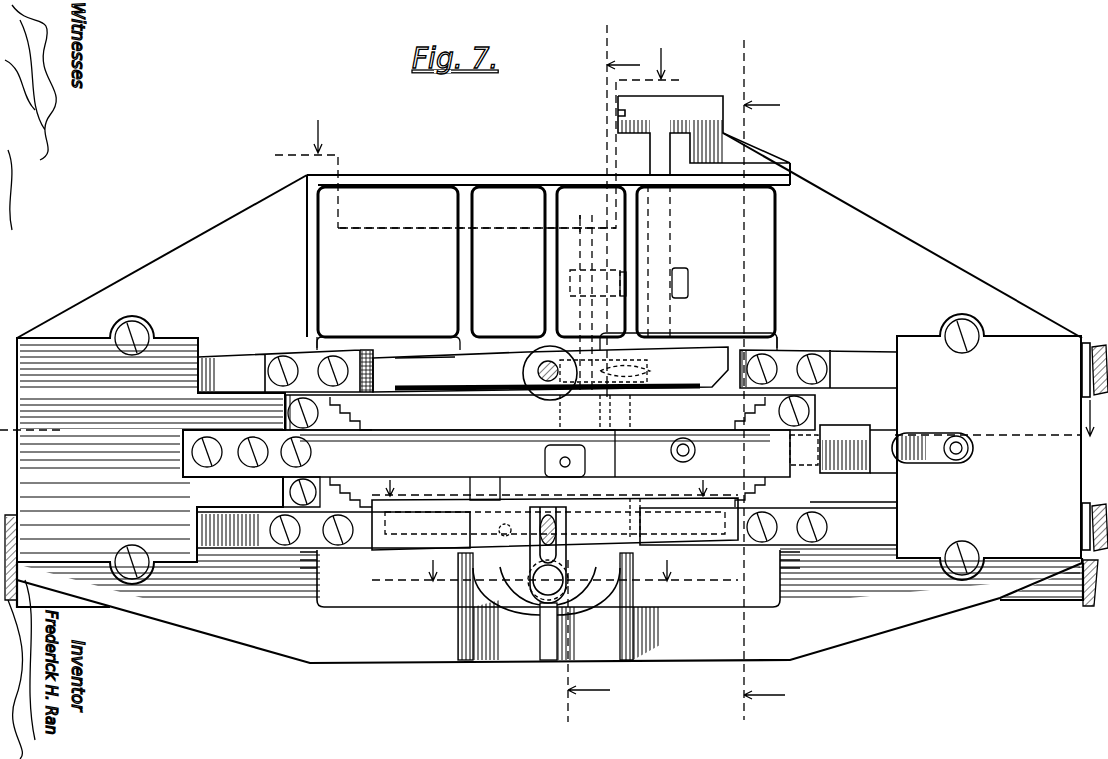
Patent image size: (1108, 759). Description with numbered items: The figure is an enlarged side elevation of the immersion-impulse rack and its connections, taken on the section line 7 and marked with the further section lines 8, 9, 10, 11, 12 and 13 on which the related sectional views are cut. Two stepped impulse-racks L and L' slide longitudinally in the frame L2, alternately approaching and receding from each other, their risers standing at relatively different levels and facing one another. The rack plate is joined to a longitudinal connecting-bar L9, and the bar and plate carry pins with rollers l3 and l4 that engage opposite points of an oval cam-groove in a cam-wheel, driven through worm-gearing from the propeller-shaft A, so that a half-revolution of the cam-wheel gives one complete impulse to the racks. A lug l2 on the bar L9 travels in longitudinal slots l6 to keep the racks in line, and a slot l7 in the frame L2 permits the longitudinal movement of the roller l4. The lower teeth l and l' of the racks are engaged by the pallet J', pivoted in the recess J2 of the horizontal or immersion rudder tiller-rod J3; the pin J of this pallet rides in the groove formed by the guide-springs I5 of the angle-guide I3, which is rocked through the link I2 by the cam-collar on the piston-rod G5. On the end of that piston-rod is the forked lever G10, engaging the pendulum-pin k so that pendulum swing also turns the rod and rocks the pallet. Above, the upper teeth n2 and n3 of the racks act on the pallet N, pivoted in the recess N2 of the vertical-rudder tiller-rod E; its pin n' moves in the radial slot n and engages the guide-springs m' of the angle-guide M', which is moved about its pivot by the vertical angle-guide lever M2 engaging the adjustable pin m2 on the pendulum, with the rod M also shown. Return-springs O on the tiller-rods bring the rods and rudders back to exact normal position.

The propeller-shaft A is at (544, 589).
The tiller-rod E is at (547, 371).
The stepped impulse-rack L is at (305, 363).
The stepped impulse-rack L' is at (800, 355).
The frame L2 is at (549, 449).
The longitudinal connecting-bar L9 is at (491, 470).
The pallet N is at (550, 373).
The recess N2 is at (412, 360).
The radial slot n is at (603, 374).
The pin n' is at (586, 333).
The upper tooth n2 is at (550, 412).
The upper tooth n3 is at (743, 413).
The rod M is at (657, 395).
The angle-guide M' is at (538, 321).
The vertical angle-guide lever M2 is at (582, 232).
The guide-spring m' is at (623, 373).
The adjustable pin m2 is at (580, 278).
The pin J is at (602, 485).
The pallet J' is at (768, 550).
The recess J2 is at (588, 520).
The horizontal rudder tiller-rod J3 is at (1082, 515).
The pendulum-pin k is at (525, 520).
The lower tooth l is at (550, 578).
The lower tooth l' is at (486, 460).
The lug l2 is at (808, 455).
The roller l3 is at (667, 452).
The roller l4 is at (970, 450).
The longitudinal slot l6 is at (862, 455).
The slot l7 is at (928, 435).
The link I2 is at (503, 552).
The angle-guide I3 is at (372, 553).
The guide-spring I5 is at (600, 516).
The piston-rod G5 is at (543, 590).
The forked lever G10 is at (563, 590).
The return-spring O is at (1085, 372).
The section line 7 7 is at (1001, 425).
The section line 8 8 is at (761, 380).
The section line 9 9 is at (600, 373).
The section line 10 10 is at (475, 138).
The section line 11 11 is at (30, 433).
The section line 12 12 is at (547, 492).
The section line 13 13 is at (555, 578).